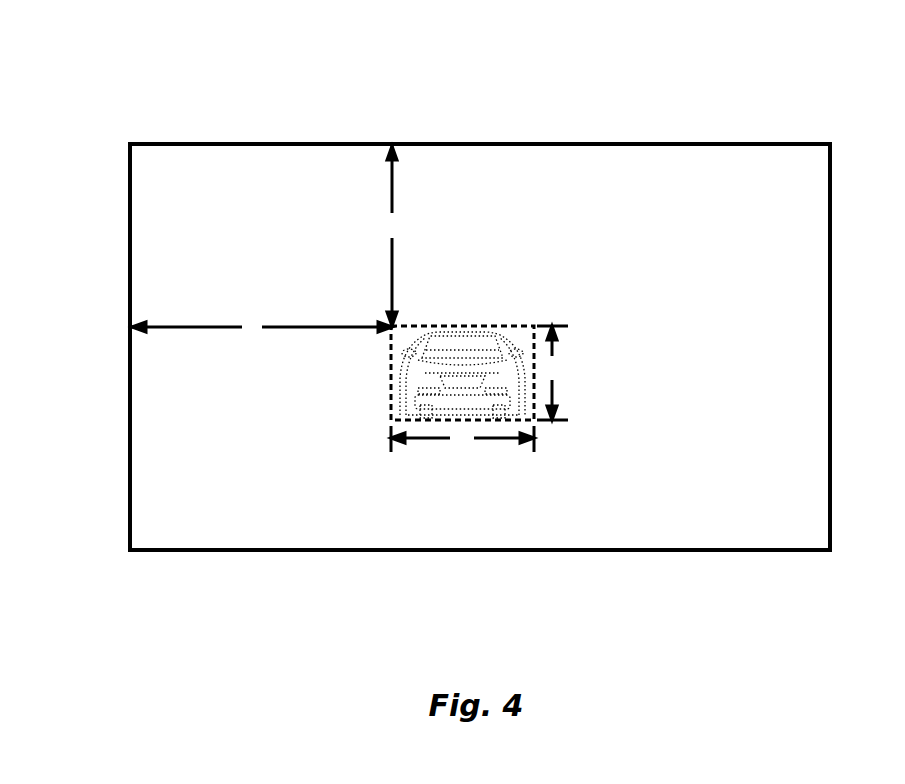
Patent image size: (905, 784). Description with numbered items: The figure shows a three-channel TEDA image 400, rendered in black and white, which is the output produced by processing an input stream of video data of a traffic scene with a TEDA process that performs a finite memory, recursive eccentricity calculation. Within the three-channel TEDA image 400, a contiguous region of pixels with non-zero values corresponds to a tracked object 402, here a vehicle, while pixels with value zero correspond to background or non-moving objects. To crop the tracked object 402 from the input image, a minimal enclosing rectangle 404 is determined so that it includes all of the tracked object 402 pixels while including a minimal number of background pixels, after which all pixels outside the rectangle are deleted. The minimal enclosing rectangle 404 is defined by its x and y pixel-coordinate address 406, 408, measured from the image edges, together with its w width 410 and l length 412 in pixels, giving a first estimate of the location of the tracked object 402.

The three-channel TEDA image 400 is at (460, 33).
The tracked object 402 is at (477, 287).
The minimal enclosing rectangle 404 is at (512, 326).
The x address 406 is at (238, 297).
The y address 408 is at (370, 205).
The w width 410 is at (467, 478).
The l length 412 is at (582, 400).